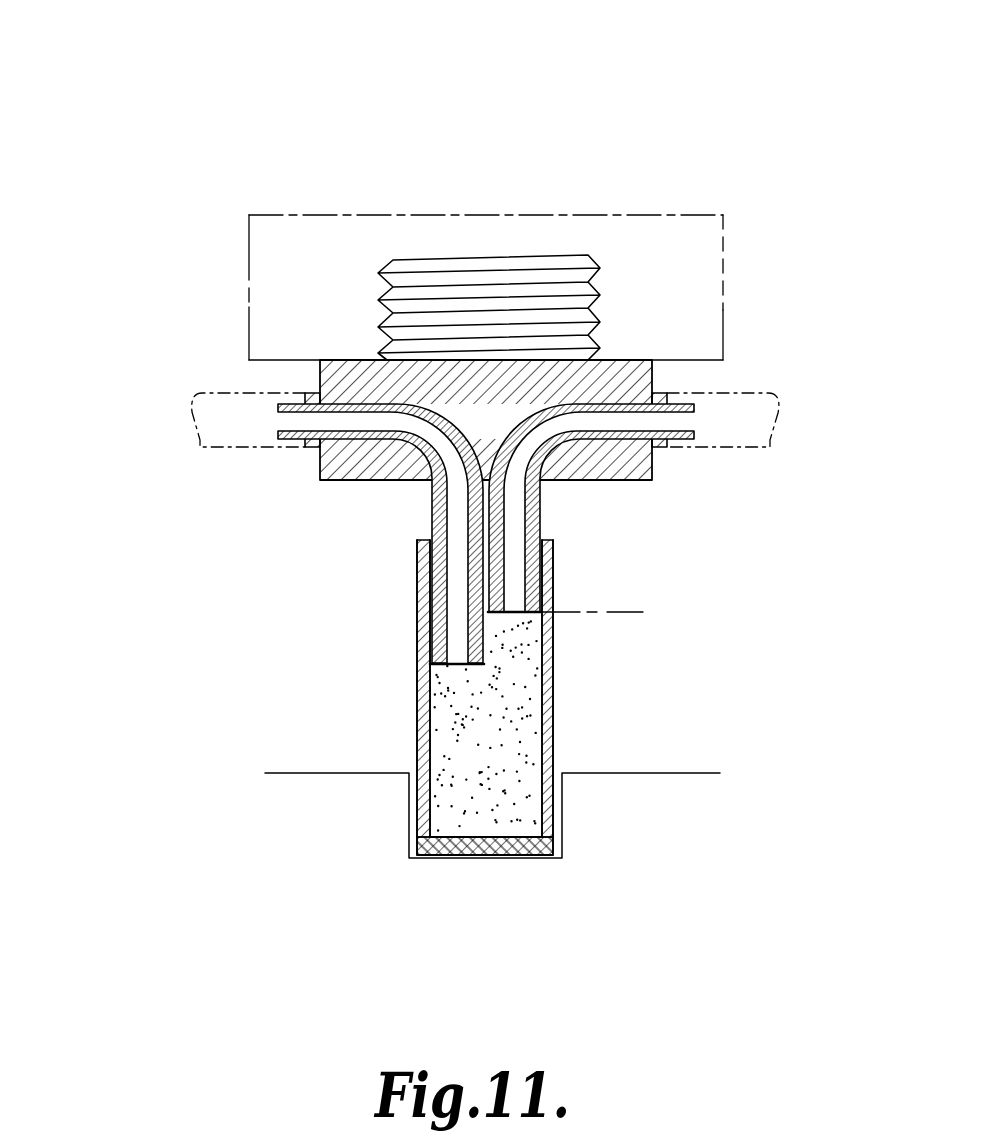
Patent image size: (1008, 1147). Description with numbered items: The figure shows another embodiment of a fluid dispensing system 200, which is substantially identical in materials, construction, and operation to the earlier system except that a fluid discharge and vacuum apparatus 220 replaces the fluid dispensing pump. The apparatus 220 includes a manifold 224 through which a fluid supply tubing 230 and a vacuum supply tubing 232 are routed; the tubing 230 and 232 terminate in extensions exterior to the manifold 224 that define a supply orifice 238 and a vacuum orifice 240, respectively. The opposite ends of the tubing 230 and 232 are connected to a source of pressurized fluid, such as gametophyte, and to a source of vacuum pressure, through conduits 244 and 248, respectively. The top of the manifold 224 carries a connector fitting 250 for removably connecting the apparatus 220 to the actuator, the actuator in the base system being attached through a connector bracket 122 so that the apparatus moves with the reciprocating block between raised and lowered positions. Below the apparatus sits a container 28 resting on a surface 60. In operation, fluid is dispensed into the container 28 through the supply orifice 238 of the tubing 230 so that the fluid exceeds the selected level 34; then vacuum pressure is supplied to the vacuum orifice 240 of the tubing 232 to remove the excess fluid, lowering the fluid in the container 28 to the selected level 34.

The fluid dispensing system 200 is at (142, 78).
The connector bracket 122 is at (248, 280).
The fluid discharge and vacuum apparatus 220 is at (217, 366).
The connector fitting 250 is at (602, 288).
The conduit 248 is at (750, 392).
The conduit 244 is at (242, 446).
The manifold 224 is at (590, 483).
The fluid supply tubing 230 is at (431, 510).
The vacuum supply tubing 232 is at (542, 513).
The selected level 34 is at (620, 612).
The vacuum orifice 240 is at (507, 613).
The supply orifice 238 is at (457, 667).
The container 28 is at (417, 728).
The support surface 60 is at (620, 773).